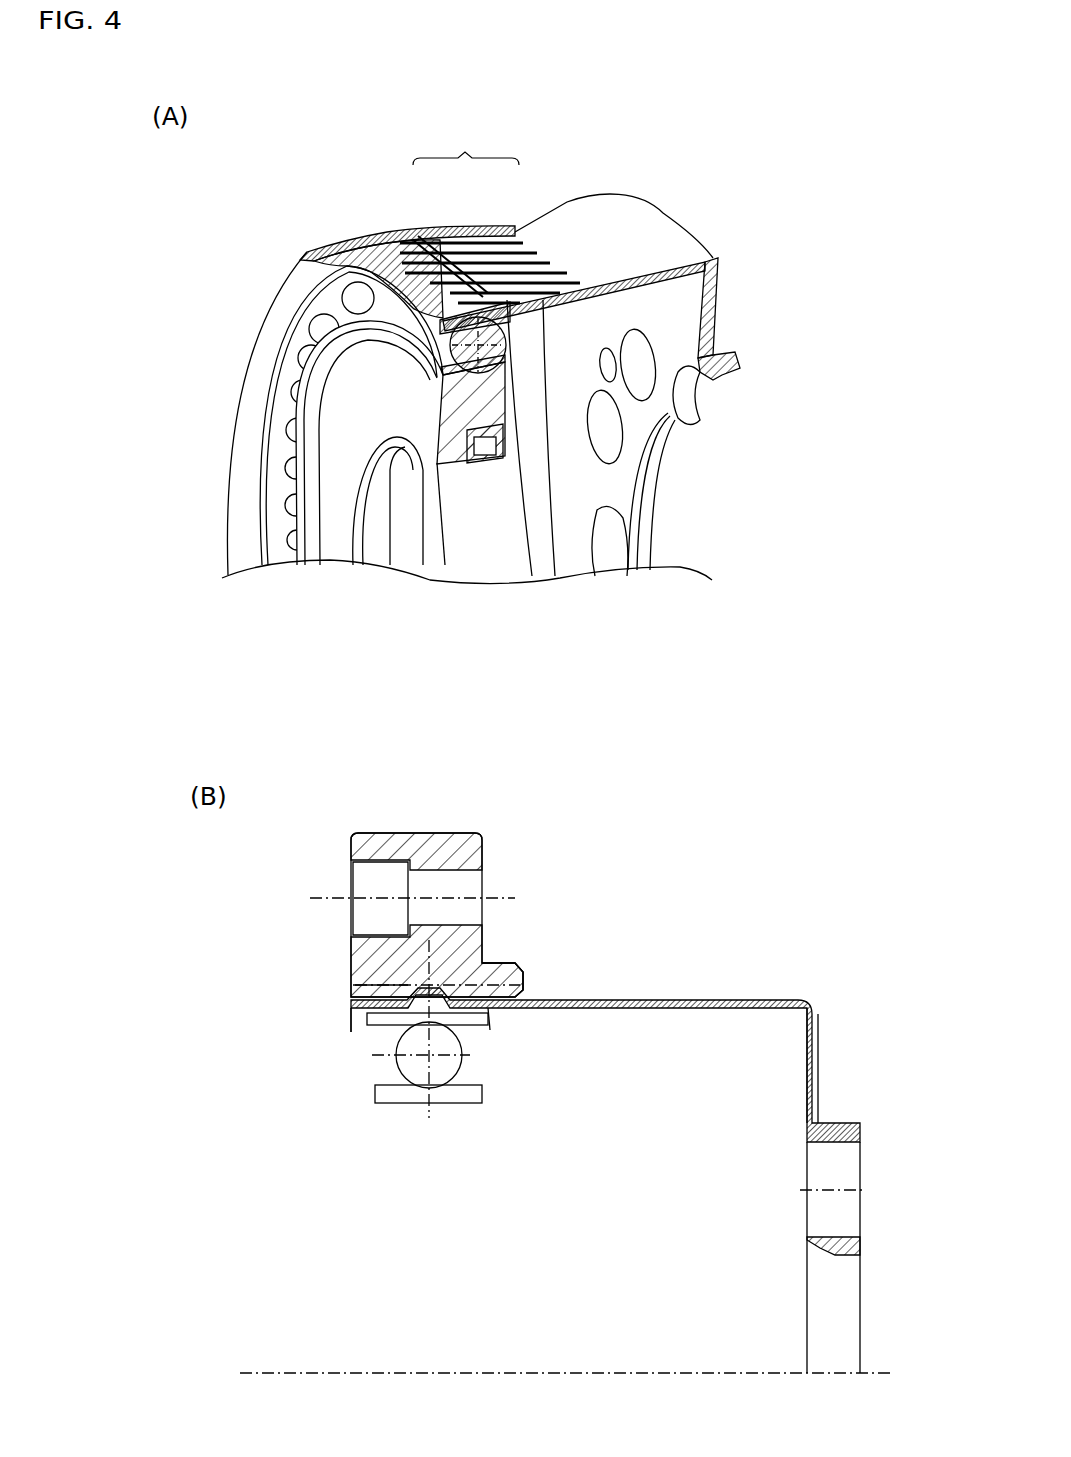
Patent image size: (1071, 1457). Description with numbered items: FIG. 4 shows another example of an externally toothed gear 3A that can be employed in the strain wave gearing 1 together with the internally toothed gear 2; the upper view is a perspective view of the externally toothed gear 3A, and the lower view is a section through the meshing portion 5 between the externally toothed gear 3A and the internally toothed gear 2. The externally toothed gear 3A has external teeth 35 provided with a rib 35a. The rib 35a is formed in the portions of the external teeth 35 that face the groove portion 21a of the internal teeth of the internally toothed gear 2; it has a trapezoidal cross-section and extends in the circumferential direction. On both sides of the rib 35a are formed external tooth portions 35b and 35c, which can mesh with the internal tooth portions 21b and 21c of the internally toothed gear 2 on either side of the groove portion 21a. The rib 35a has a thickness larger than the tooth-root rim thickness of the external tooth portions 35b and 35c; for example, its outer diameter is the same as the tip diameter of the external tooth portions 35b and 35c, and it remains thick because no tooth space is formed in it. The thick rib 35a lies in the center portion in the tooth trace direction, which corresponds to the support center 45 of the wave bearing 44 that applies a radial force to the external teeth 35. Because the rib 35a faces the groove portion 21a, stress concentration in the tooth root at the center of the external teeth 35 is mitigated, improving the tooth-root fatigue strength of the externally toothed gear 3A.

The strain wave gearing 1 is at (575, 905).
The internally toothed gear 2 is at (500, 930).
The externally toothed gear 3A is at (162, 222).
The meshing portion 5 is at (325, 995).
The groove portion 21a is at (372, 936).
The internal tooth portion 21b is at (372, 985).
The internal tooth portion 21c is at (475, 990).
The external teeth 35 is at (466, 148).
The rib 35a is at (352, 1060).
The external tooth portion 35b is at (290, 1068).
The external tooth portion 35c is at (555, 1095).
The wave bearing 44 is at (548, 1158).
The support center 45 is at (478, 1160).